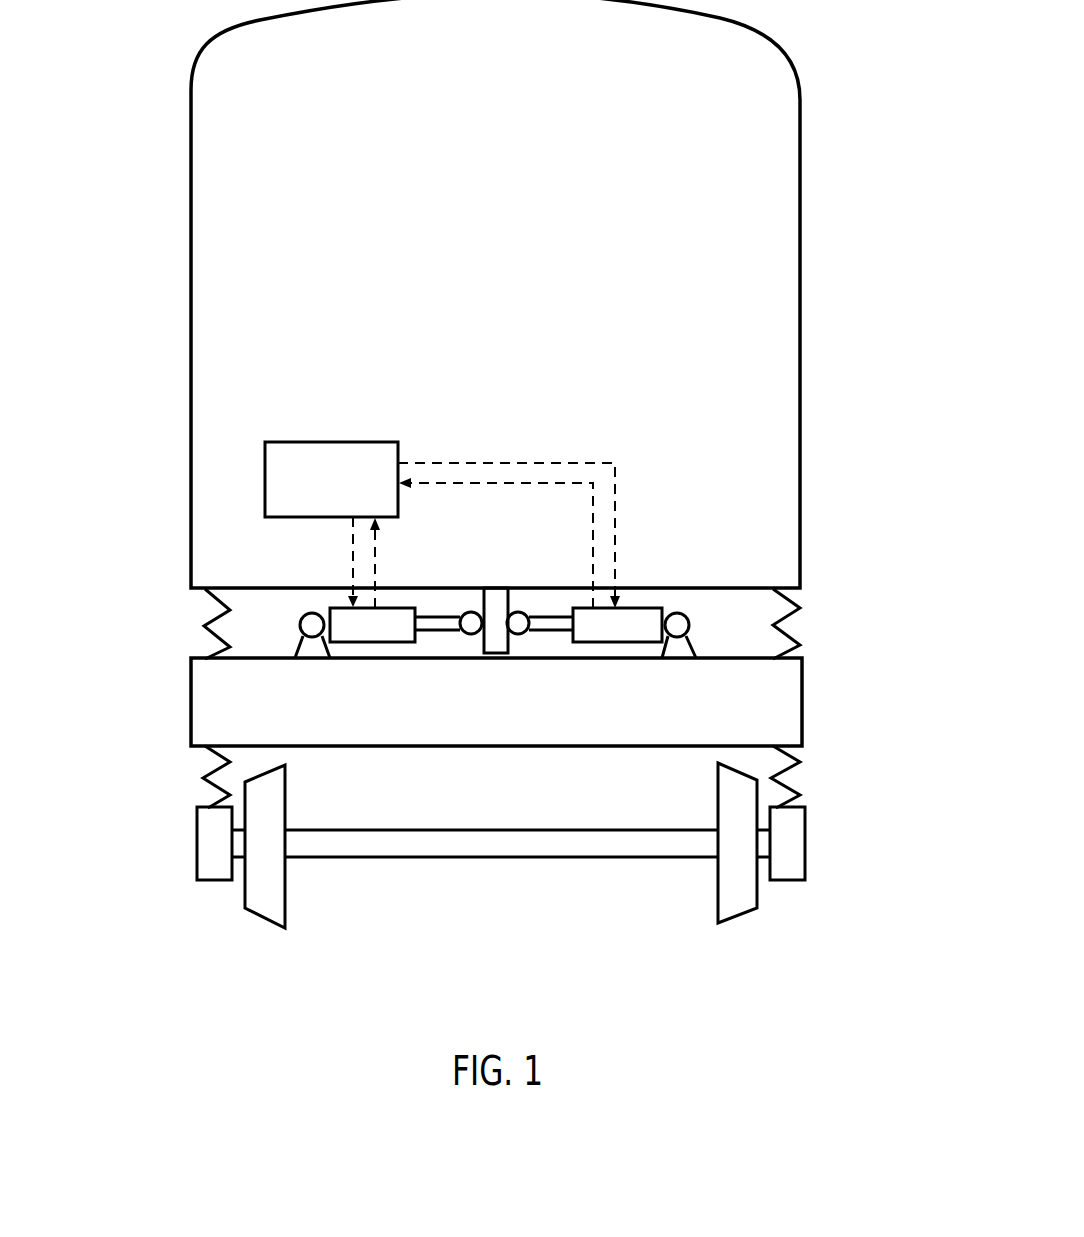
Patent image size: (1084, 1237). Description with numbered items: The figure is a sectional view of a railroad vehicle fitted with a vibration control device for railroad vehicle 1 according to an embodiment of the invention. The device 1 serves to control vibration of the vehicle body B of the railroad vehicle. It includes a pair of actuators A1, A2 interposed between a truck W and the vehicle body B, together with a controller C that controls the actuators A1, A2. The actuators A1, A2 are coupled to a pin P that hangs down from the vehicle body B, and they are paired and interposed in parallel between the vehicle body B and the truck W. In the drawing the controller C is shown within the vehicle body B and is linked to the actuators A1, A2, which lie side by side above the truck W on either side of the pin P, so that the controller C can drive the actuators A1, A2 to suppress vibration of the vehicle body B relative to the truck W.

The vibration control device for railroad vehicle 1 is at (238, 446).
The vehicle body B is at (782, 391).
The controller C is at (265, 490).
The actuator A1 is at (300, 614).
The actuator A2 is at (627, 613).
The truck W is at (198, 687).
The pin P is at (487, 648).